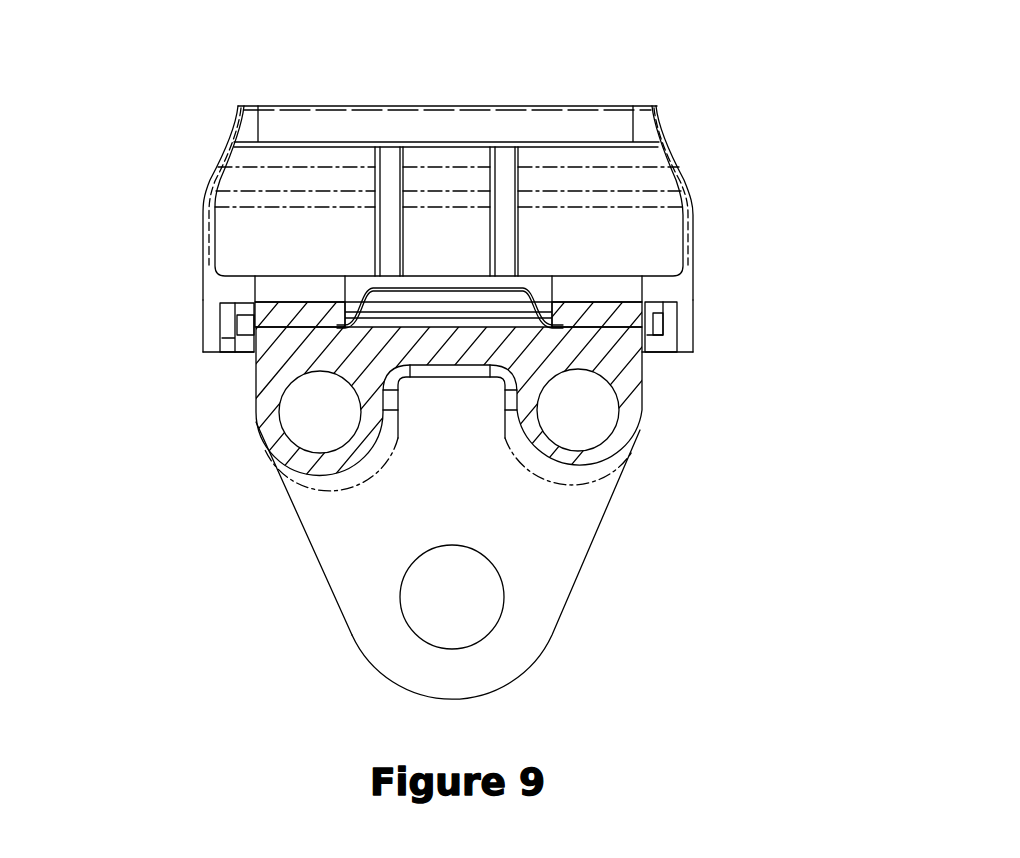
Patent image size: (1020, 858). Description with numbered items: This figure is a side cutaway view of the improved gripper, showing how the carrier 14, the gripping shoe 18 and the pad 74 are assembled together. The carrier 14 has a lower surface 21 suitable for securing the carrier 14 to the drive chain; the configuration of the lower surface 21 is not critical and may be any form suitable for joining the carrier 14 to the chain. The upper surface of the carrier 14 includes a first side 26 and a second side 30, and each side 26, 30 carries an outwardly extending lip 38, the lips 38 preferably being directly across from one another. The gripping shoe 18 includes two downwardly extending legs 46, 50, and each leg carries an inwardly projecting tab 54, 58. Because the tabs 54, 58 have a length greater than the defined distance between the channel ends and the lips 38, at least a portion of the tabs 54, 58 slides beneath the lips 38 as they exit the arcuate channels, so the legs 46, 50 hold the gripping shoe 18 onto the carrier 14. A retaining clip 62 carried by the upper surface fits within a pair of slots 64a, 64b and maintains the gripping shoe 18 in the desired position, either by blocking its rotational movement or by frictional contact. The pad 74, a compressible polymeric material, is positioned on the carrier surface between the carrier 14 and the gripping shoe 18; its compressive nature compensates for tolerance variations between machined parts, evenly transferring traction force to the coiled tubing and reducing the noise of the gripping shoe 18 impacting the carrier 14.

The carrier 14 is at (553, 580).
The gripping shoe 18 is at (599, 127).
The lower surface 21 is at (335, 590).
The first side 26 is at (248, 322).
The second side 30 is at (652, 325).
The outwardly extending lip 38 is at (451, 303).
The first leg 46 is at (203, 337).
The second leg 50 is at (695, 343).
The tab 54 is at (235, 352).
The tab 58 is at (662, 350).
The retaining clip 62 is at (360, 297).
The slot 64a is at (287, 327).
The slot 64b is at (617, 327).
The pad 74 is at (658, 310).